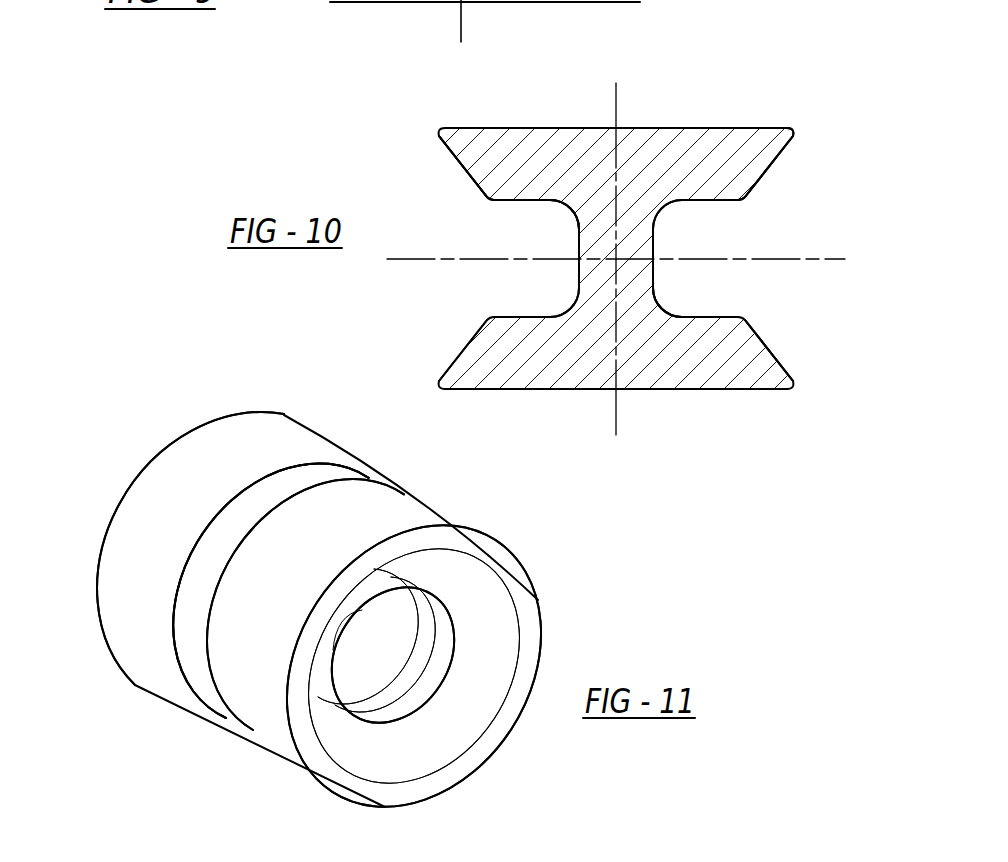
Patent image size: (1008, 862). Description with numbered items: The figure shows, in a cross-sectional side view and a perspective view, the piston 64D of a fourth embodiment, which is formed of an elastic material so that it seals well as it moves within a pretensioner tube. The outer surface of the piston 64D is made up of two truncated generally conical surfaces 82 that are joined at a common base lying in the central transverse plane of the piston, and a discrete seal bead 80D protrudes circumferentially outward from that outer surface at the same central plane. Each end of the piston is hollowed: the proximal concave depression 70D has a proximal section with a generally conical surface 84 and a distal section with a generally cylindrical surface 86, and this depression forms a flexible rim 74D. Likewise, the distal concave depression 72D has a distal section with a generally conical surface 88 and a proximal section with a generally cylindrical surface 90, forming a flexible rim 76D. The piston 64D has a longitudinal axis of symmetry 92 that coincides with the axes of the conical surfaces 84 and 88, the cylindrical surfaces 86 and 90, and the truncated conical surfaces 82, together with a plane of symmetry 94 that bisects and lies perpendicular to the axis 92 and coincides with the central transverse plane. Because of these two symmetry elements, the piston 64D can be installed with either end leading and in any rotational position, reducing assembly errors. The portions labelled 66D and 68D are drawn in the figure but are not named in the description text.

In FIG. 10, the piston 64D is at (760, 49).
In FIG. 11, the piston 64D is at (140, 720).
In FIG. 10, the first flange 66D is at (437, 136).
In FIG. 10, the second flange 68D is at (796, 136).
In FIG. 10, the proximal concave depression 70D is at (561, 265).
In FIG. 10, the distal concave depression 72D is at (672, 268).
In FIG. 10, the flexible rim 74D is at (517, 160).
In FIG. 10, the flexible rim 76D is at (717, 163).
In FIG. 10, the discrete seal bead 80D is at (612, 127).
In FIG. 11, the discrete seal bead 80D is at (317, 478).
In FIG. 10, the truncated generally conical surfaces 82 is at (530, 128).
In FIG. 11, the truncated generally conical surfaces 82 is at (277, 440).
In FIG. 10, the generally conical surface 84 is at (468, 176).
In FIG. 10, the generally cylindrical surface 86 is at (530, 200).
In FIG. 10, the generally conical surface 88 is at (773, 168).
In FIG. 11, the generally conical surface 88 is at (490, 625).
In FIG. 10, the generally cylindrical surface 90 is at (712, 202).
In FIG. 11, the generally cylindrical surface 90 is at (415, 673).
In FIG. 10, the longitudinal axis of symmetry 92 is at (403, 260).
In FIG. 10, the plane of symmetry 94 is at (617, 98).